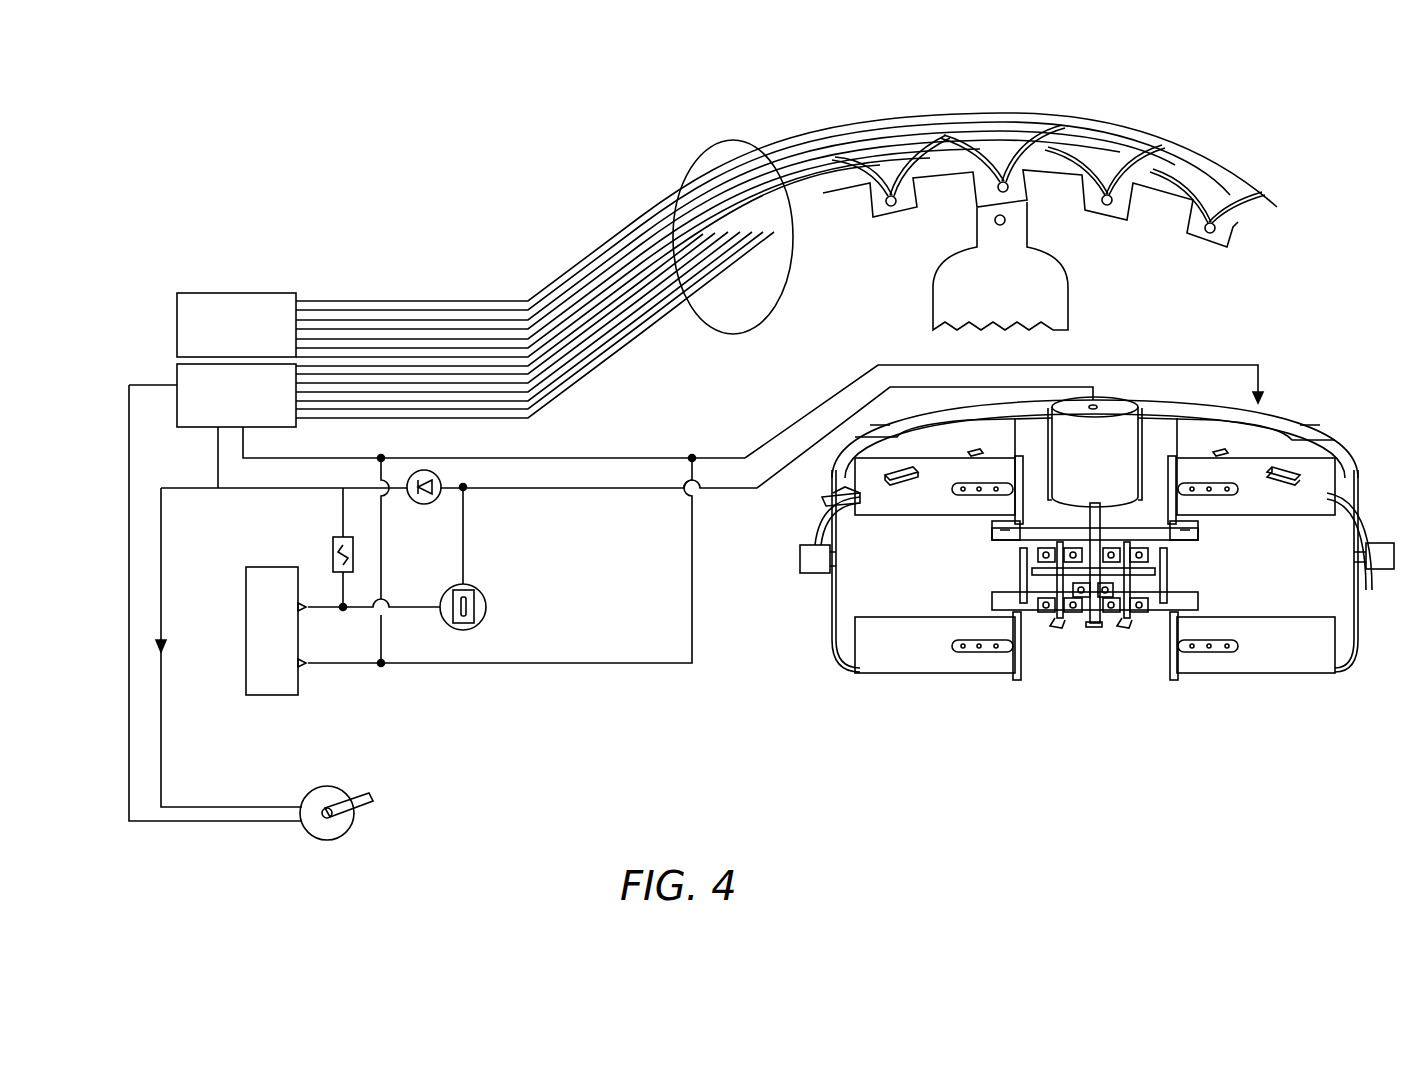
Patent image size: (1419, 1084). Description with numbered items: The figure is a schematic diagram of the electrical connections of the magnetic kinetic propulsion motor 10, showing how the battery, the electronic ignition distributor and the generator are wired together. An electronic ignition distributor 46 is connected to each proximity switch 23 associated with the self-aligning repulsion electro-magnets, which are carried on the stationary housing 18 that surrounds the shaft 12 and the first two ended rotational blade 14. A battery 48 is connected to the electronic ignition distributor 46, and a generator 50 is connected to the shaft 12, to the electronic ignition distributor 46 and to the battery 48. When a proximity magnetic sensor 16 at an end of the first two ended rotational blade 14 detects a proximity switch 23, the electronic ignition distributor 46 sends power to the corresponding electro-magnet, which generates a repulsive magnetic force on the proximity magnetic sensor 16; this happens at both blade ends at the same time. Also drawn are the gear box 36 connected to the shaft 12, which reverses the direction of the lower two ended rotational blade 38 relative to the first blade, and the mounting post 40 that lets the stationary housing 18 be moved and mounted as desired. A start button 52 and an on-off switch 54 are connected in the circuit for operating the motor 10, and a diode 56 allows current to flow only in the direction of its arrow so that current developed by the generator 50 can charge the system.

The magnetic kinetic propulsion motor 10 is at (543, 146).
The shaft 12 is at (1018, 524).
The first two ended rotational blade 14 is at (942, 295).
The proximity magnetic sensor 16 is at (1006, 222).
The stationary housing 18 is at (1227, 185).
The proximity switch 23 is at (891, 208).
The gear box 36 is at (1018, 562).
The lower two ended rotational blade 38 is at (912, 664).
The mounting post 40 is at (808, 560).
The electronic ignition distributor 46 is at (215, 293).
The battery 48 is at (272, 695).
The generator 50 is at (1120, 432).
The start button 52 is at (488, 598).
The on-off switch 54 is at (338, 788).
The diode 56 is at (424, 504).